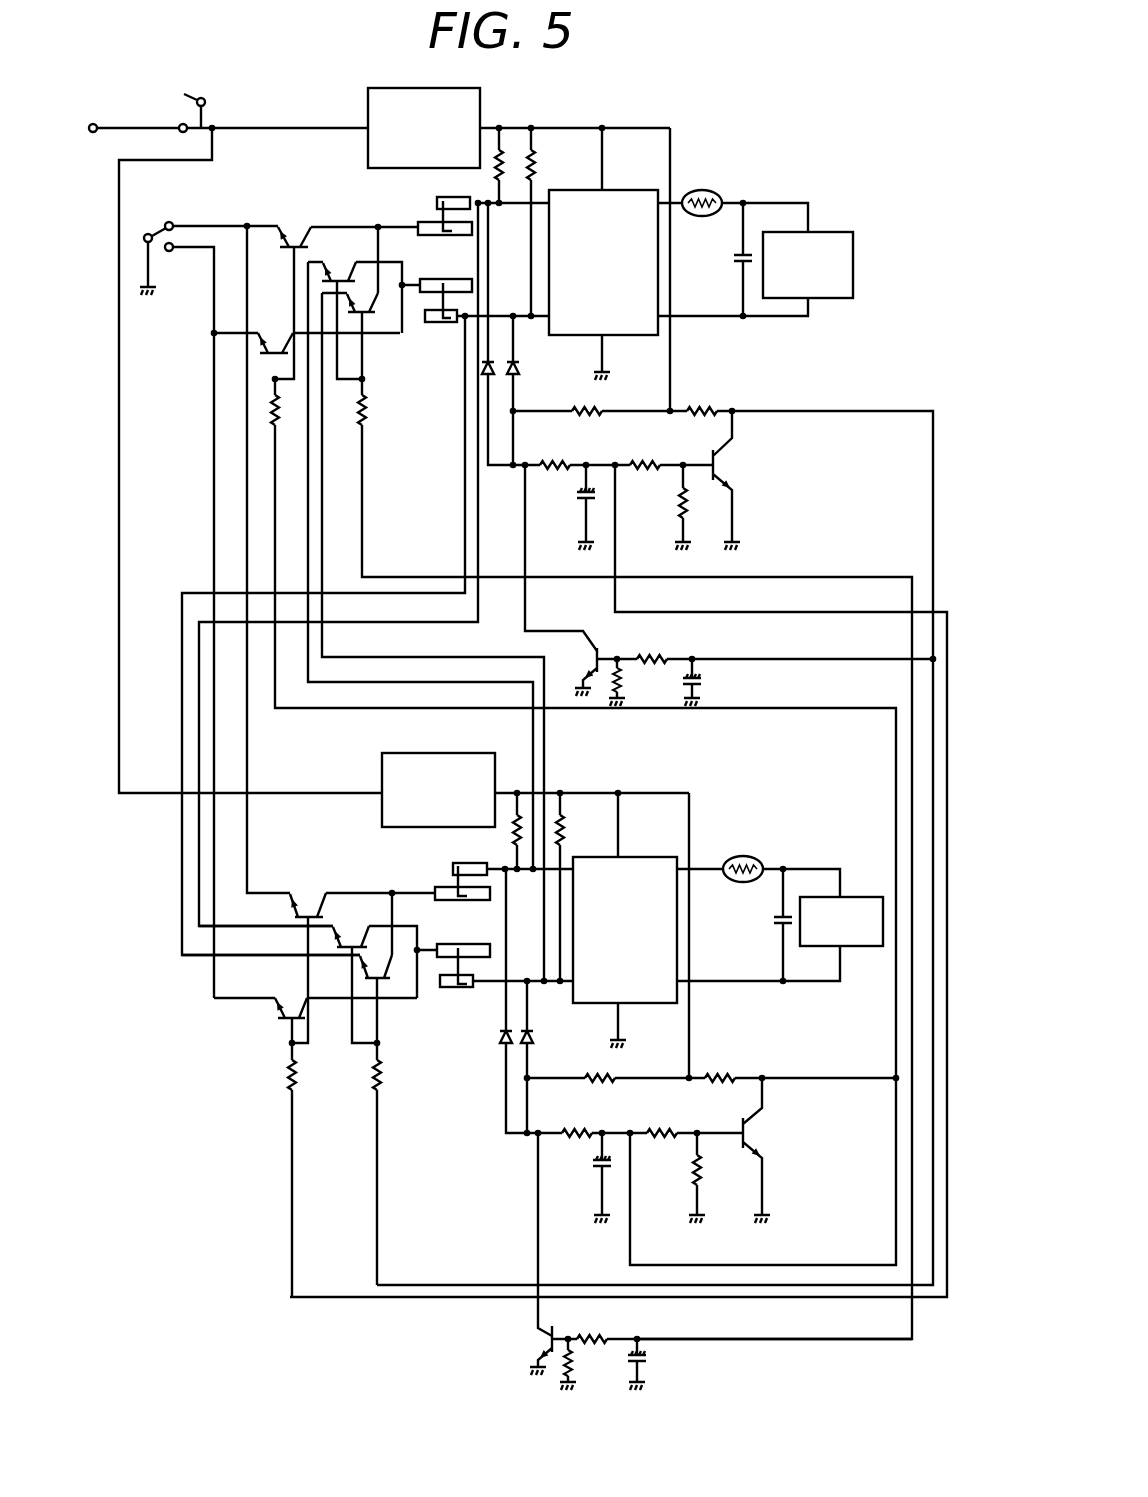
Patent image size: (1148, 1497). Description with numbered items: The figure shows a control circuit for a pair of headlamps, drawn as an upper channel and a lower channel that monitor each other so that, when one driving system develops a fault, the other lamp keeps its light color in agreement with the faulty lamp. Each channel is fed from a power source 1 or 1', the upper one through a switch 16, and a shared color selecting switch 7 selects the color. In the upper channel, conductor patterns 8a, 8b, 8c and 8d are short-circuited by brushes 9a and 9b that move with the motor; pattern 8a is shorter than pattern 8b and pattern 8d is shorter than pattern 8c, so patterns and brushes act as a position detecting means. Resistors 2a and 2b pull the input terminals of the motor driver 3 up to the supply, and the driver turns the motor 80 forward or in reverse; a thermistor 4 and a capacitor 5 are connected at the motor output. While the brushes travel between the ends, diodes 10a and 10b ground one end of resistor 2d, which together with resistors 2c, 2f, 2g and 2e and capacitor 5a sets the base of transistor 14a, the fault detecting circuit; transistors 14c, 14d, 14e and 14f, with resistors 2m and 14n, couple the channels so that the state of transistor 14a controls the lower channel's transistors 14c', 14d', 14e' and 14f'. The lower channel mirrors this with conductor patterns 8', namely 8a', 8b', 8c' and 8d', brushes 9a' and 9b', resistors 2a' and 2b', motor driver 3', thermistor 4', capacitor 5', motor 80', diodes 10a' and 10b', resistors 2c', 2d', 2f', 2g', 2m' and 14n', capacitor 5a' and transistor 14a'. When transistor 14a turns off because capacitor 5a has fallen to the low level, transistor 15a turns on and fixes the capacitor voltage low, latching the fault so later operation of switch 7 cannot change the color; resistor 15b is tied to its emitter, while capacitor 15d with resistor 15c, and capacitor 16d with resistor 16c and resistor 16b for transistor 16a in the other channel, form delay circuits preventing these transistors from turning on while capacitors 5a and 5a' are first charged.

The electric power source 1 is at (424, 115).
The power switch 16 is at (206, 104).
The color selecting switch 7 is at (158, 225).
The transistor 14c is at (281, 261).
The transistor 14e is at (348, 256).
The transistor 14f is at (385, 272).
The transistor 14d is at (227, 368).
The conductor pattern 8a is at (460, 191).
The conductor pattern 8b is at (422, 216).
The conductor pattern 8c is at (446, 267).
The conductor pattern 8d is at (442, 340).
The brush 9a is at (424, 202).
The brush 9b is at (428, 322).
The resistor 2a is at (510, 202).
The resistor 2b is at (555, 164).
The motor driver 3 is at (603, 247).
The thermistor 4 is at (704, 188).
The capacitor 5 is at (730, 243).
The motor 80 is at (819, 250).
The resistor 2m is at (226, 420).
The resistor 14n is at (391, 420).
The diode 10a is at (453, 385).
The diode 10b is at (540, 361).
The resistor 2c is at (605, 429).
The resistor 2g is at (703, 394).
The resistor 2f is at (543, 448).
The resistor 2d is at (664, 449).
The transistor 14a is at (748, 476).
The capacitor 5a is at (566, 509).
The resistor 2e is at (677, 502).
The transistor 15a is at (598, 645).
The resistor 15b is at (624, 680).
The resistor 15c is at (658, 653).
The capacitor 15d is at (700, 680).
The electric power source 1' is at (441, 776).
The resistor 2a' is at (492, 837).
The resistor 2b' is at (584, 824).
The transistor 14c' is at (289, 890).
The transistor 14e' is at (360, 922).
The transistor 14f' is at (351, 974).
The transistor 14d' is at (255, 1023).
The conductor patterns 8' is at (441, 940).
The conductor pattern 8a' is at (446, 854).
The conductor pattern 8b' is at (464, 911).
The conductor pattern 8c' is at (457, 934).
The conductor pattern 8d' is at (469, 1000).
The brush 9a' is at (425, 878).
The brush 9b' is at (452, 998).
The motor driver 3' is at (625, 916).
The current sensing resistor 4' is at (749, 856).
The capacitor 5' is at (759, 909).
The motor 80' is at (844, 904).
The diode 10a' is at (474, 1060).
The diode 10b' is at (558, 1044).
The resistor 2m' is at (259, 1076).
The resistor 14n' is at (403, 1094).
The resistor 2c' is at (665, 1142).
The resistor 2g' is at (740, 1062).
The resistor 2f' is at (572, 1152).
The resistor 2d' is at (662, 1152).
The capacitor 5a' is at (588, 1183).
The transistor 14a' is at (788, 1146).
The transistor 16a is at (532, 1338).
The resistor 16b is at (574, 1358).
The resistor 16c is at (596, 1338).
The capacitor 16d is at (650, 1358).